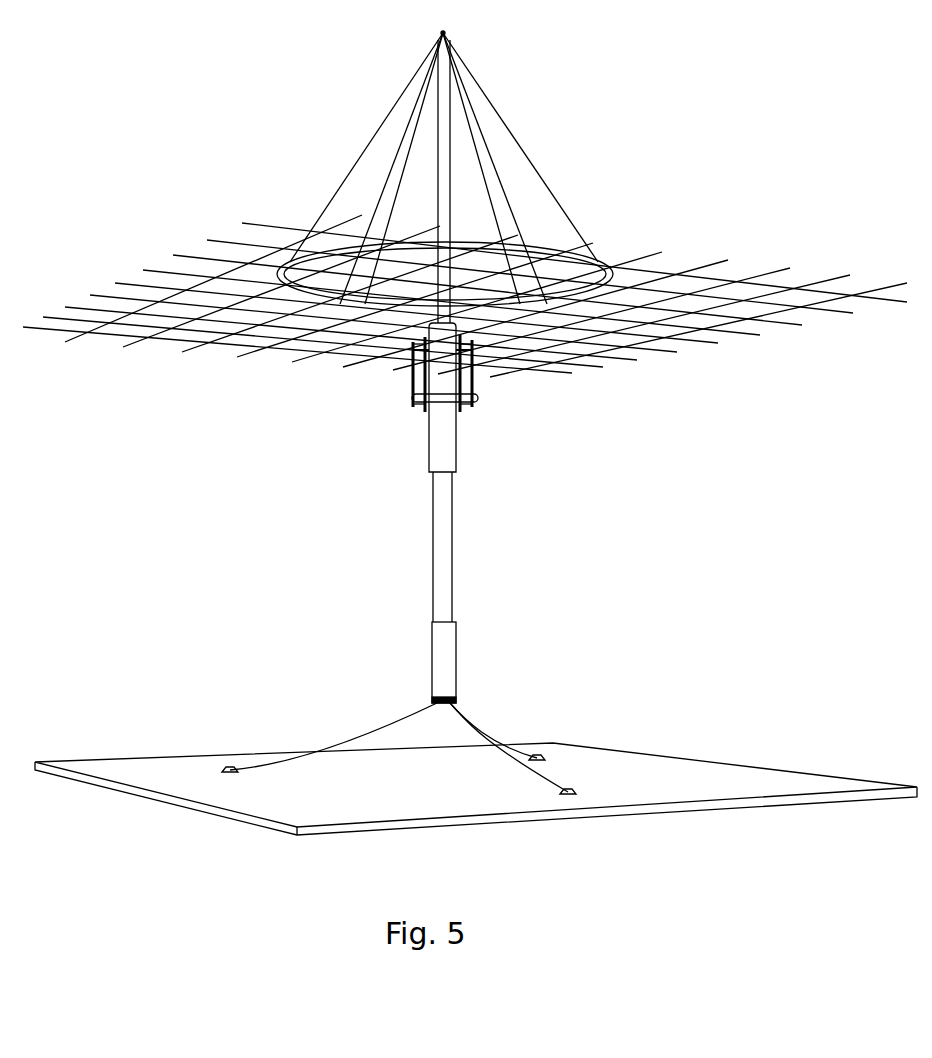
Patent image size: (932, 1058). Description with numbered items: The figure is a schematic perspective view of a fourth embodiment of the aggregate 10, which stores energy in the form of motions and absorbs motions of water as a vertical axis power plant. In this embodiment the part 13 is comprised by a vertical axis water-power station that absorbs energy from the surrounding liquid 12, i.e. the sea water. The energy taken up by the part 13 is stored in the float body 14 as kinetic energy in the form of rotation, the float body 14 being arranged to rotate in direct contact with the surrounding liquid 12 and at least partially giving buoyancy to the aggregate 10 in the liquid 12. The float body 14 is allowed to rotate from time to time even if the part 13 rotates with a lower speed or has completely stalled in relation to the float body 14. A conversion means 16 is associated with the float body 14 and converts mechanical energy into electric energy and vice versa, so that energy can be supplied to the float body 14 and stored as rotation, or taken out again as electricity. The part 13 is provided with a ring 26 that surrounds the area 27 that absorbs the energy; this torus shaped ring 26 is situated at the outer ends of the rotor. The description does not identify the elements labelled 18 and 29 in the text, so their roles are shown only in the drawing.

The aggregate 10 is at (641, 172).
The liquid 12 is at (893, 333).
The part 13 is at (432, 388).
The float body 14 is at (443, 430).
The conversion means 16 is at (442, 692).
The base plate 18 is at (455, 793).
The ring 26 is at (475, 397).
The area 27 is at (437, 400).
The apex 29 is at (447, 33).